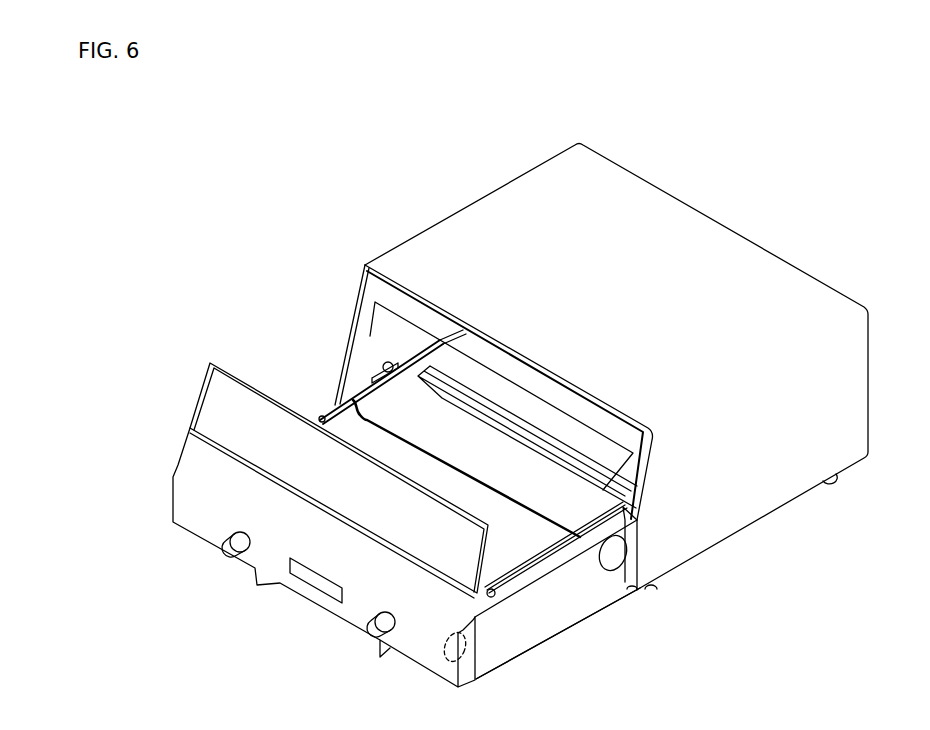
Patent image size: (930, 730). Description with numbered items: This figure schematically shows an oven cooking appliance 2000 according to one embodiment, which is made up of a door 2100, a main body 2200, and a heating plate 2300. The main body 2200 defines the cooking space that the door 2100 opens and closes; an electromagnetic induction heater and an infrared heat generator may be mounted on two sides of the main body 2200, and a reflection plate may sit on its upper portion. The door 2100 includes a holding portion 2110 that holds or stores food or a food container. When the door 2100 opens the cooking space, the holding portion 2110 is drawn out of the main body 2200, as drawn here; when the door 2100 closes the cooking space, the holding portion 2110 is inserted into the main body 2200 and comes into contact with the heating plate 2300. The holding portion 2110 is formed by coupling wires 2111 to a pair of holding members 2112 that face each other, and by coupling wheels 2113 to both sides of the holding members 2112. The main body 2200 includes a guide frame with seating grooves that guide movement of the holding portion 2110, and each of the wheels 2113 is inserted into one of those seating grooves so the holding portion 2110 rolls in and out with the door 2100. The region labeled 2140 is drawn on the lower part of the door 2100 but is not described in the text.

The cooking appliance 2000 is at (330, 132).
The door 2100 is at (166, 434).
The holding portion 2110 is at (288, 252).
The wires 2111 is at (320, 418).
The holding members 2112 is at (350, 400).
The wheels 2113 is at (385, 363).
The drawer bottom 2140 is at (548, 615).
The main body 2200 is at (670, 175).
The heating plate 2300 is at (441, 356).